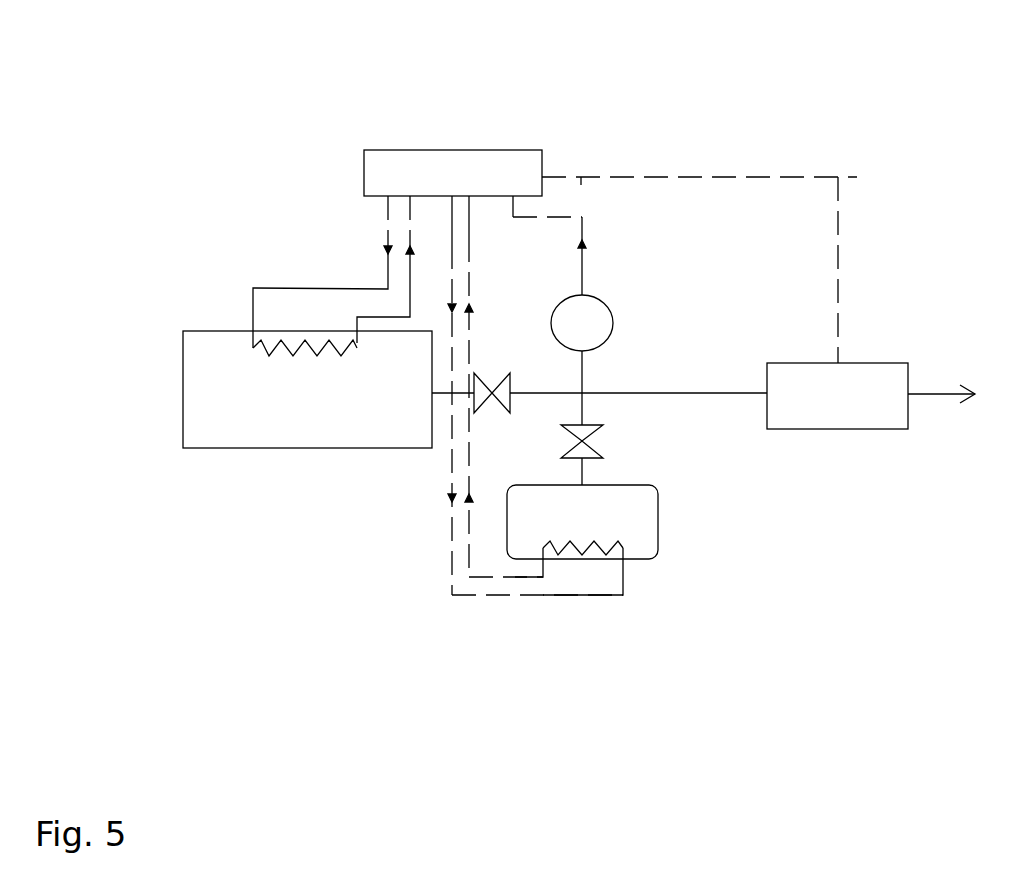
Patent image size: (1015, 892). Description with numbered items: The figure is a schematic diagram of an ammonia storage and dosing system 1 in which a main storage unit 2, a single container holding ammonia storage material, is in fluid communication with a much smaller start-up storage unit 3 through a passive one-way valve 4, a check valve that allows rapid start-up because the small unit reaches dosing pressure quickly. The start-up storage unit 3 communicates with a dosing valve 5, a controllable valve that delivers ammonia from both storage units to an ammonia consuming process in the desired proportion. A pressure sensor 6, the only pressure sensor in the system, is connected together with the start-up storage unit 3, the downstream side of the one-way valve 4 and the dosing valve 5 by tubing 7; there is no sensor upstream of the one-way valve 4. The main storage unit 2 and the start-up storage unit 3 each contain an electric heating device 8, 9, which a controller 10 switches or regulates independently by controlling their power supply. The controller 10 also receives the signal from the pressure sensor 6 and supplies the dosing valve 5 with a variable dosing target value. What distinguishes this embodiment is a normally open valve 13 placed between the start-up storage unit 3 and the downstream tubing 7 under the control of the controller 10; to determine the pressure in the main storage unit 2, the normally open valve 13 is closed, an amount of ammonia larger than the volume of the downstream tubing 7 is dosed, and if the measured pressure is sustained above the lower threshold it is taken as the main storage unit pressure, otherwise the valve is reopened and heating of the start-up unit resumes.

The ammonia storage and dosing system 1 is at (840, 97).
The main storage unit 2 is at (244, 440).
The start-up storage unit 3 is at (648, 512).
The passive one-way valve 4 is at (492, 393).
The dosing valve 5 is at (898, 425).
The pressure sensor 6 is at (610, 320).
The tubing 7 is at (672, 393).
The heating device 8 is at (255, 348).
The heating device 9 is at (594, 549).
The controller 10 is at (530, 152).
The normally open valve 13 is at (586, 441).